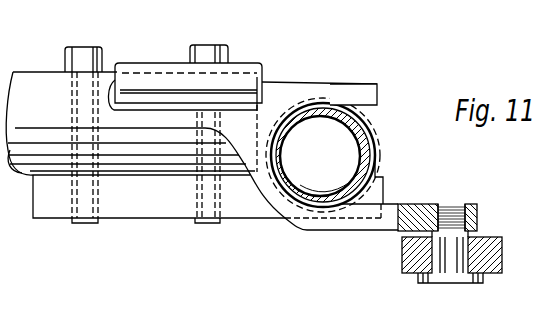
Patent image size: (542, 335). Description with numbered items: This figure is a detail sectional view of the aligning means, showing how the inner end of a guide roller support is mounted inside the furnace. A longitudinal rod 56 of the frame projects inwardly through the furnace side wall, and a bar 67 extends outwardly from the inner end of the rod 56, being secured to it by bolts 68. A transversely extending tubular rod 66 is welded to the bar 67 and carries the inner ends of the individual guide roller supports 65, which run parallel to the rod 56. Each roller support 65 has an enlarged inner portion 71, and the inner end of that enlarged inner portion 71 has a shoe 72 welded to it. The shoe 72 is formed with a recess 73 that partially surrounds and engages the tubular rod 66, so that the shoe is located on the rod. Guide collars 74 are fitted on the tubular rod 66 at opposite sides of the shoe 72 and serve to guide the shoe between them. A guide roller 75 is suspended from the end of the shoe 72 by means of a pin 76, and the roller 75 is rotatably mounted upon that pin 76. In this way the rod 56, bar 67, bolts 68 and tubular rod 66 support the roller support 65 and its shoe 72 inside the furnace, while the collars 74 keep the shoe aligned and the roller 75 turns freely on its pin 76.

The rod 56 is at (33, 102).
The guide roller support 65 is at (148, 65).
The tubular rod 66 is at (373, 127).
The bar 67 is at (140, 197).
The bolt 68 is at (80, 62).
The enlarged inner portion 71 is at (237, 82).
The shoe 72 is at (282, 95).
The recess 73 is at (353, 110).
The guide collar 74 is at (376, 155).
The guide roller 75 is at (402, 247).
The pin 76 is at (448, 253).